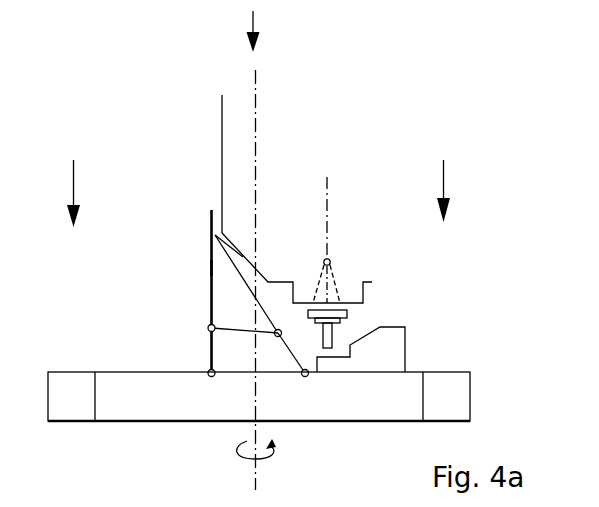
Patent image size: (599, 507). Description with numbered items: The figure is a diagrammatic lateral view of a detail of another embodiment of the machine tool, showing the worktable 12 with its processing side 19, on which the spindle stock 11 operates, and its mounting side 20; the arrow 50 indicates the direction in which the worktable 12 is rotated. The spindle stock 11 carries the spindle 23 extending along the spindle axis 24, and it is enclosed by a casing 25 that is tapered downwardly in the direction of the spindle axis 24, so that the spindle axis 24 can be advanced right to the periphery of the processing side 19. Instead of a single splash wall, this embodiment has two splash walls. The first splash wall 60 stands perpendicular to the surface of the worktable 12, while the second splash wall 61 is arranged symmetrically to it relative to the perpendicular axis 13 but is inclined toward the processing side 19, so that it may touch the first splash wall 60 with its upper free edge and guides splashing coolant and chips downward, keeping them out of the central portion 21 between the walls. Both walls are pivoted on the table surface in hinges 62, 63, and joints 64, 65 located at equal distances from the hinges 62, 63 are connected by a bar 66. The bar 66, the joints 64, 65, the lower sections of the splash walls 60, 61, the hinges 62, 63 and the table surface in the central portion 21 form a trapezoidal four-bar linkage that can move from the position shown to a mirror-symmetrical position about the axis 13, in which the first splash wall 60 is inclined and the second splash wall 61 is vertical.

The spindle stock 11 is at (243, 138).
The worktable 12 is at (138, 398).
The perpendicular axis 13 is at (262, 97).
The processing side 19 is at (444, 178).
The mounting side 20 is at (72, 182).
The central portion 21 is at (272, 26).
The spindle 23 is at (365, 293).
The spindle axis 24 is at (332, 228).
The casing 25 is at (240, 242).
The arrow 50 is at (273, 457).
The first splash wall 60 is at (210, 268).
The second splash wall 61 is at (222, 249).
The hinge 62 is at (210, 369).
The hinge 63 is at (306, 377).
The joint 64 is at (208, 328).
The joint 65 is at (278, 329).
The bar 66 is at (233, 326).